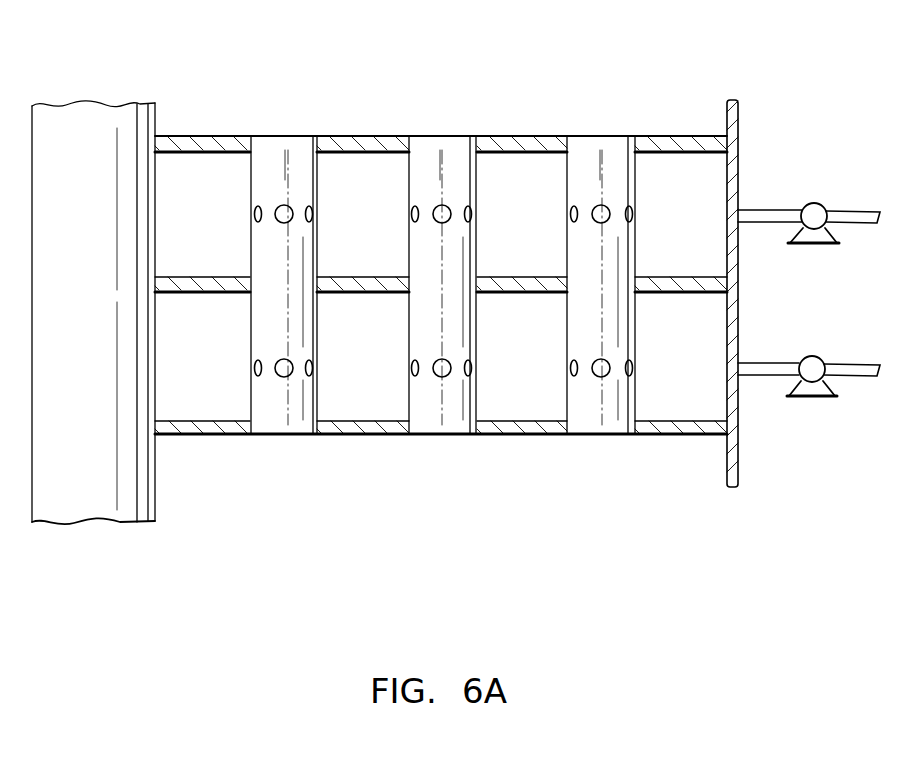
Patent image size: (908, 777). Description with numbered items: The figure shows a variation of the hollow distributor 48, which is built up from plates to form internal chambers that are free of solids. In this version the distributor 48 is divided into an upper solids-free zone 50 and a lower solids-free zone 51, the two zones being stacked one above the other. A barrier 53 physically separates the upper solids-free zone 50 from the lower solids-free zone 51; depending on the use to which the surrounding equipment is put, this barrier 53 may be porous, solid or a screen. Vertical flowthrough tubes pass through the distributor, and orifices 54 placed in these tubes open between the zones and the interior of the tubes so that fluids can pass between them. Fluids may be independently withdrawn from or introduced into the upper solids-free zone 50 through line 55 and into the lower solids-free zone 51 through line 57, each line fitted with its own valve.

The distributor 48 is at (440, 470).
The upper solids-free zone 50 is at (206, 216).
The lower solids-free zone 51 is at (209, 365).
The barrier 53 is at (340, 277).
The orifices 54 is at (309, 204).
The line 55 is at (777, 215).
The line 57 is at (771, 368).